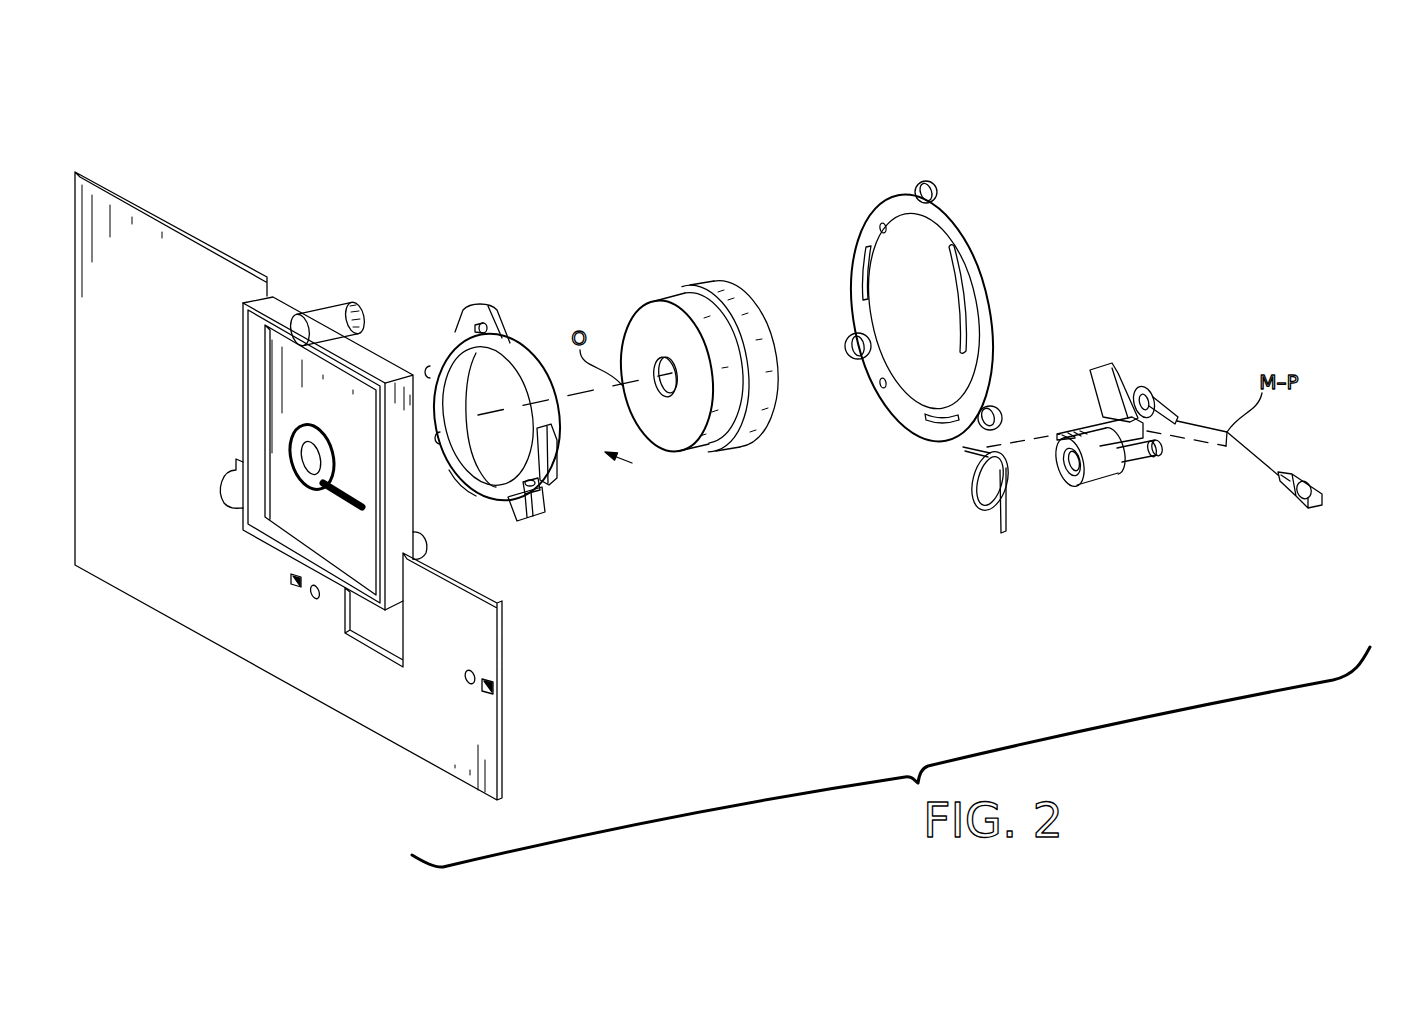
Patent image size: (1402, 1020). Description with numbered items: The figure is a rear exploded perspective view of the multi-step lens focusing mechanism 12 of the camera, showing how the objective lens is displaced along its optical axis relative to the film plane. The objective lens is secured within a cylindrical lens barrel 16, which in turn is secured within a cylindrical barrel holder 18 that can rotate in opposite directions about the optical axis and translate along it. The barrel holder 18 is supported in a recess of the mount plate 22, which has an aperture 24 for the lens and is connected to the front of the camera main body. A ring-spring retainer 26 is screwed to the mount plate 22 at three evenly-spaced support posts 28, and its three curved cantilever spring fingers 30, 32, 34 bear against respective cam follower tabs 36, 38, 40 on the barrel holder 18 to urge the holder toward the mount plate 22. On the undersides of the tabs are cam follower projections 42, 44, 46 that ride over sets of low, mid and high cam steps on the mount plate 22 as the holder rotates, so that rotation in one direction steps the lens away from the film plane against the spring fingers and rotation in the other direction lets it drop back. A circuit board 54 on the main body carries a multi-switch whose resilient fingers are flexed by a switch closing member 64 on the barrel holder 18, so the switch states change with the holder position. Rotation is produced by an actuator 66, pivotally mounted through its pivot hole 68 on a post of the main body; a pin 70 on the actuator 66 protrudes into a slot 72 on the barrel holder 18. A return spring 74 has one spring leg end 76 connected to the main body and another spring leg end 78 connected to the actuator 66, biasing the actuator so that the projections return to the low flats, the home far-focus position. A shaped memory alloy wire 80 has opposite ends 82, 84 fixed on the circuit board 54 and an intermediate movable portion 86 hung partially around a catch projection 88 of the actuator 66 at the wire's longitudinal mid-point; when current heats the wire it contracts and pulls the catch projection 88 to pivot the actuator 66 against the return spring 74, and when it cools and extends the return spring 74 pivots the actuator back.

The multi-step lens focusing mechanism 12 is at (465, 98).
The cylindrical lens barrel 16 is at (760, 430).
The cylindrical barrel holder 18 is at (632, 463).
The mount plate 22 is at (263, 243).
The aperture 24 is at (318, 442).
The ring-spring retainer 26 is at (876, 378).
The support posts 28 is at (337, 300).
The cantilever spring finger 30 is at (855, 285).
The cantilever spring finger 32 is at (962, 313).
The cantilever spring finger 34 is at (900, 400).
The cam follower tab 36 is at (485, 304).
The cam follower tab 38 is at (556, 472).
The cam follower tab 40 is at (455, 480).
The cam follower projection 42 is at (475, 328).
The cam follower projection 44 is at (542, 510).
The cam follower projection 46 is at (440, 442).
The circuit board 54 is at (337, 692).
The switch closing member 64 is at (430, 372).
The actuator 66 is at (1097, 477).
The pivot hole 68 is at (1065, 475).
The pin 70 is at (1107, 367).
The slot 72 is at (530, 518).
The return spring 74 is at (975, 498).
The spring leg end 76 is at (1005, 532).
The spring leg end 78 is at (963, 450).
The shaped memory alloy wire 80 is at (1268, 445).
The end of SMA wire 82 is at (1155, 398).
The end of SMA wire 84 is at (1305, 473).
The intermediate movable portion 86 is at (1186, 418).
The catch projection 88 is at (1160, 445).